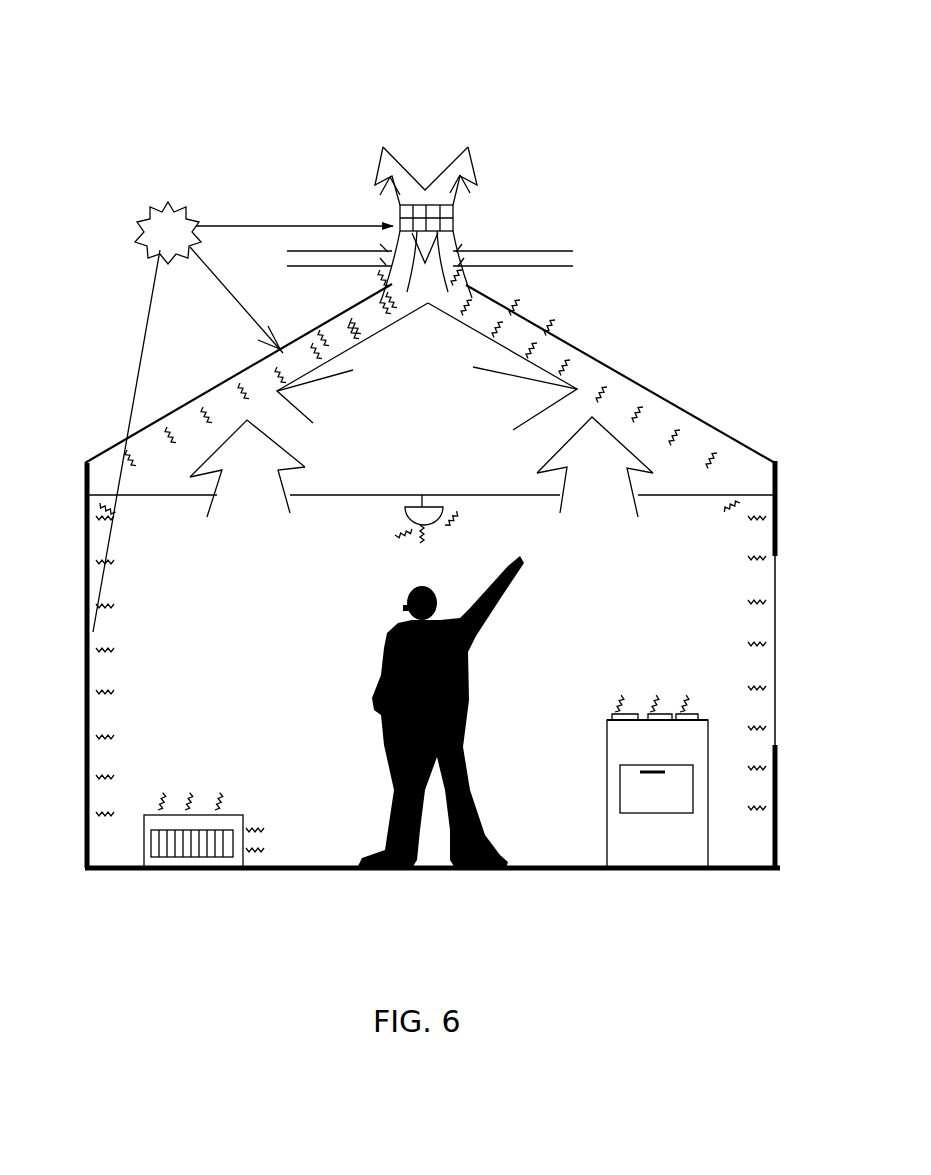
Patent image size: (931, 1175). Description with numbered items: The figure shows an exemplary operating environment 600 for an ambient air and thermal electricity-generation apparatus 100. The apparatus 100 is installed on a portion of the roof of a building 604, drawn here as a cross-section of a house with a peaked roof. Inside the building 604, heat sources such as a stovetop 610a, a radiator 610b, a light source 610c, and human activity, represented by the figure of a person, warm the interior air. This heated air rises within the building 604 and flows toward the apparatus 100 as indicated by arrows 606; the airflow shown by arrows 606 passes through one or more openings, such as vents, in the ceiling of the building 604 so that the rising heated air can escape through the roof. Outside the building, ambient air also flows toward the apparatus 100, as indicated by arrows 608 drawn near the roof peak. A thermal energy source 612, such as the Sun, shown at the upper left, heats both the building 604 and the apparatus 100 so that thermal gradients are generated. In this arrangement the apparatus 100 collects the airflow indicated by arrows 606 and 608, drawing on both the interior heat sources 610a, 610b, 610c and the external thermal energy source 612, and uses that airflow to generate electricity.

The operating environment 600 is at (114, 52).
The building 604 is at (780, 553).
The arrows 606 is at (547, 468).
The ambient air and thermal electricity-generation apparatus 100 is at (447, 224).
The thermal energy source 612 is at (154, 213).
The arrows 608 is at (363, 270).
The stovetop 610a is at (630, 716).
The radiator 610b is at (199, 810).
The light source 610c is at (405, 512).